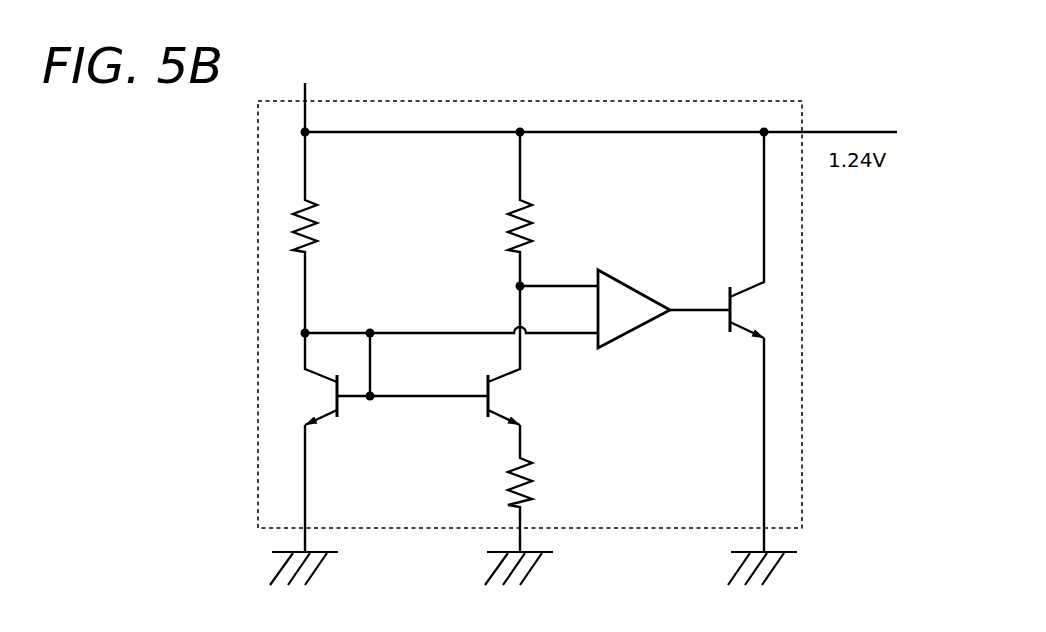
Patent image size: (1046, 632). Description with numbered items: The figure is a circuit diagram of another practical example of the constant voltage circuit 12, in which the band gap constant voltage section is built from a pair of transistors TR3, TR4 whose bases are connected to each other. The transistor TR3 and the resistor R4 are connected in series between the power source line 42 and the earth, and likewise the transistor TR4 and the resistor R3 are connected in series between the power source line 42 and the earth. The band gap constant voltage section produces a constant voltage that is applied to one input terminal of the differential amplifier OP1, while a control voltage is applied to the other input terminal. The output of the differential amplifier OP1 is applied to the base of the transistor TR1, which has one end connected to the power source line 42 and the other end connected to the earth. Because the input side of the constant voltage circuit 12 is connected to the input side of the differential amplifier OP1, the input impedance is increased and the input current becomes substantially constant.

The constant voltage circuit 12 is at (632, 101).
The power source line 42 is at (307, 93).
The resistor R4 is at (321, 232).
The resistor R3 is at (536, 209).
The differential amplifier OP1 is at (517, 301).
The transistor TR1 is at (729, 342).
The transistor TR3 is at (396, 442).
The transistor TR4 is at (522, 419).